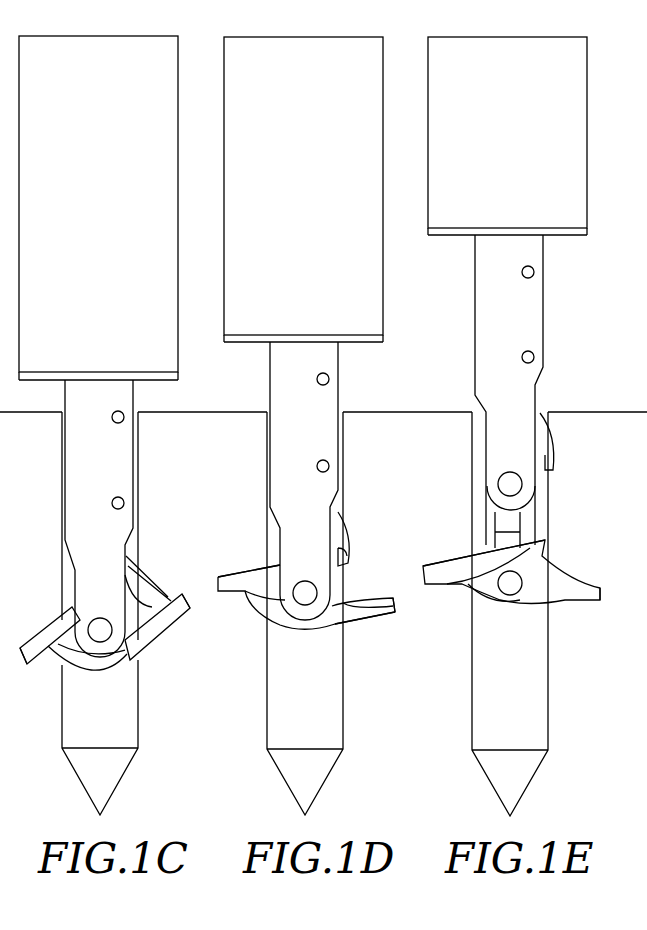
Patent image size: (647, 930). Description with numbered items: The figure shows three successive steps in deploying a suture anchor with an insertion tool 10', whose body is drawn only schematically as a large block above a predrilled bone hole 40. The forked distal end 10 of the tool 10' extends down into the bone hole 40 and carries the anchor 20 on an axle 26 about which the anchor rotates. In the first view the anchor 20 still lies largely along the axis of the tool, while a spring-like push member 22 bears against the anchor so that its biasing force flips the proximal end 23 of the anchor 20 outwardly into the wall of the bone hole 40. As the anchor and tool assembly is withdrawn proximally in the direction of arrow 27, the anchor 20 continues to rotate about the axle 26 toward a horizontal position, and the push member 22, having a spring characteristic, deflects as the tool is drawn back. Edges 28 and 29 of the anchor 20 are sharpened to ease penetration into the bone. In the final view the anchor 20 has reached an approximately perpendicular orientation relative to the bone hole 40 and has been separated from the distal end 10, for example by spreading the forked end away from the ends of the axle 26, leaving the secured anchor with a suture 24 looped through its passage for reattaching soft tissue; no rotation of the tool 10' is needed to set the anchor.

In FIG. 1C, the insertion tool 10' is at (102, 190).
In FIG. 1D, the insertion tool 10' is at (307, 171).
In FIG. 1E, the insertion tool 10' is at (510, 118).
In FIG. 1C, the distal end of insertion tool 10 is at (75, 518).
In FIG. 1D, the distal end of insertion tool 10 is at (281, 481).
In FIG. 1E, the distal end of insertion tool 10 is at (485, 390).
In FIG. 1C, the anchor 20 is at (160, 626).
In FIG. 1D, the anchor 20 is at (243, 590).
In FIG. 1E, the anchor 20 is at (574, 612).
In FIG. 1C, the push member 22 is at (140, 577).
In FIG. 1D, the push member 22 is at (348, 533).
In FIG. 1E, the push member 22 is at (556, 440).
In FIG. 1C, the proximal end of anchor 23 is at (193, 590).
In FIG. 1D, the proximal end of anchor 23 is at (395, 604).
In FIG. 1E, the proximal end of anchor 23 is at (600, 594).
In FIG. 1E, the suture 24 is at (540, 520).
In FIG. 1C, the axle 26 is at (102, 634).
In FIG. 1D, the axle 26 is at (307, 597).
In FIG. 1E, the axle 26 is at (510, 588).
In FIG. 1C, the arrow 27 is at (199, 303).
In FIG. 1D, the edge of anchor 28 is at (368, 625).
In FIG. 1D, the edge of anchor 29 is at (252, 570).
In FIG. 1E, the edge of anchor 29 is at (454, 558).
In FIG. 1C, the bone hole 40 is at (138, 464).
In FIG. 1D, the bone hole 40 is at (343, 492).
In FIG. 1E, the bone hole 40 is at (472, 672).